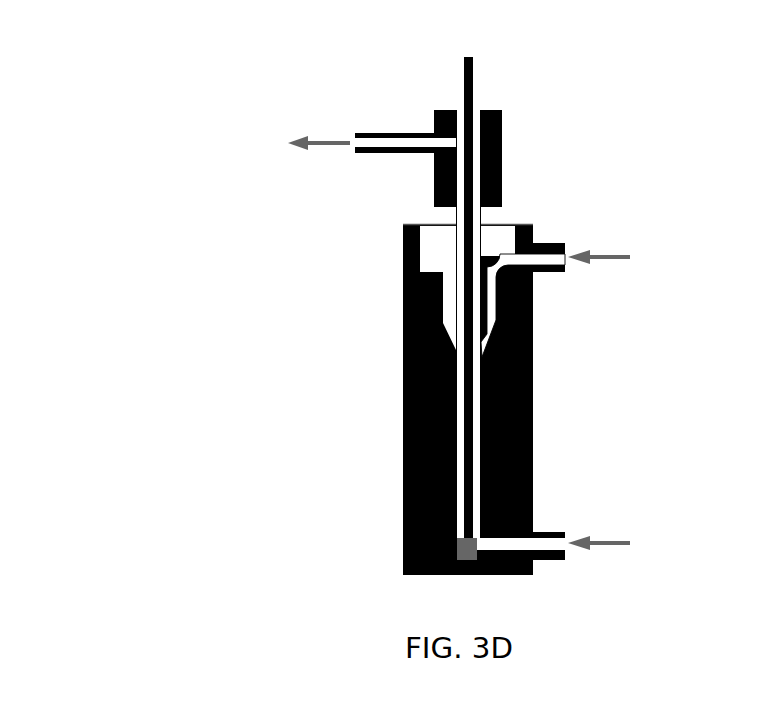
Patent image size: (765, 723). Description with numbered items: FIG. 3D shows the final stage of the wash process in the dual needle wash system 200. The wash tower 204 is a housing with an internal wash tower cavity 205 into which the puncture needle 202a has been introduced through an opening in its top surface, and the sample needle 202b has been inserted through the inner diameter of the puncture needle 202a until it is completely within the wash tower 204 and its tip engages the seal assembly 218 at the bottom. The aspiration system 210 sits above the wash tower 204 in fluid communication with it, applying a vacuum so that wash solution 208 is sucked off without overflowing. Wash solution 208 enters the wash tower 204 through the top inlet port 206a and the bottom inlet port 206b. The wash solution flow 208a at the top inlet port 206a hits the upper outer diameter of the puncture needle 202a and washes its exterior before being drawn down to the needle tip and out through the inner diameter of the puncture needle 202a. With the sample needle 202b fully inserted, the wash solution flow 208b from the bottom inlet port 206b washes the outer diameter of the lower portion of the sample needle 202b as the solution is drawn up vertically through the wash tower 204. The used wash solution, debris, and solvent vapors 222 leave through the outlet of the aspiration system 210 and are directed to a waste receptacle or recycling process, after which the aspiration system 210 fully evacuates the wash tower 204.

The dual needle wash system 200 is at (371, 297).
The puncture needle 202a is at (450, 249).
The sample needle 202b is at (478, 83).
The wash tower 204 is at (396, 345).
The wash tower cavity 205 is at (443, 296).
The top inlet port 206a is at (570, 239).
The bottom inlet port 206b is at (572, 526).
The wash solution 208 is at (456, 417).
The wash solution flow at top inlet port 208a is at (606, 273).
The wash solution flow at bottom inlet port 208b is at (607, 554).
The aspiration system 210 is at (432, 109).
The seal assembly 218 is at (453, 539).
The used wash solution, debris, and solvent vapors 222 is at (295, 132).